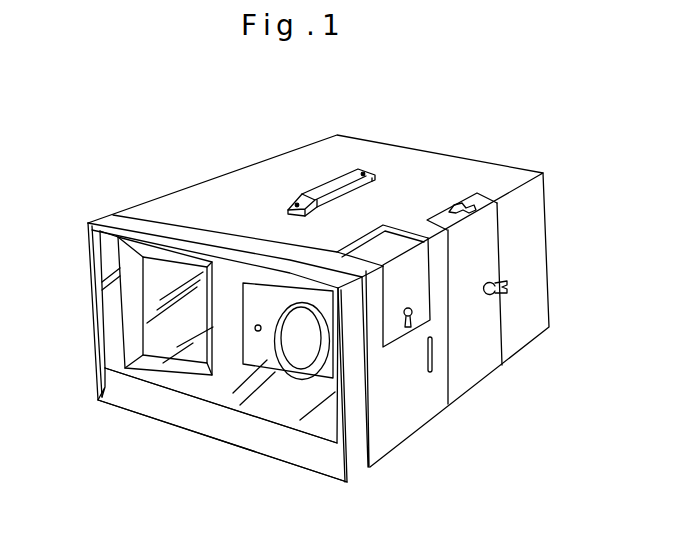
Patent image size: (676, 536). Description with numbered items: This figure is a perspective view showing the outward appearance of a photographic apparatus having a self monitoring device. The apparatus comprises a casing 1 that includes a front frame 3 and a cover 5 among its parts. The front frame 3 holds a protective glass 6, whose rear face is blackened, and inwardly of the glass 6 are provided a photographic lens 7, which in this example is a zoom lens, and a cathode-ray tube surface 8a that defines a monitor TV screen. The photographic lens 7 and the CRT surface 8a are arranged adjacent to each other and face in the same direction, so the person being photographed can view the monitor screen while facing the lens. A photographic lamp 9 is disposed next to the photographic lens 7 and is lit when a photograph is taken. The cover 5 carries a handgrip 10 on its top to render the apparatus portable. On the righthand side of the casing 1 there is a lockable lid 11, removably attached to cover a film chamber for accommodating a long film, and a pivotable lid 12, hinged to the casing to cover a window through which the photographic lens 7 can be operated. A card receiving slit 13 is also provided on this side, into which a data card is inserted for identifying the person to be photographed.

The casing 1 is at (197, 168).
The front frame 3 is at (193, 418).
The cover 5 is at (440, 162).
The protective glass 6 is at (115, 333).
The photographic lens 7 is at (302, 358).
The cathode-ray tube surface 8a is at (170, 338).
The photographic lamp 9 is at (258, 335).
The handgrip 10 is at (314, 192).
The lockable lid 11 is at (488, 360).
The pivotable lid 12 is at (393, 335).
The card receiving slit 13 is at (429, 373).